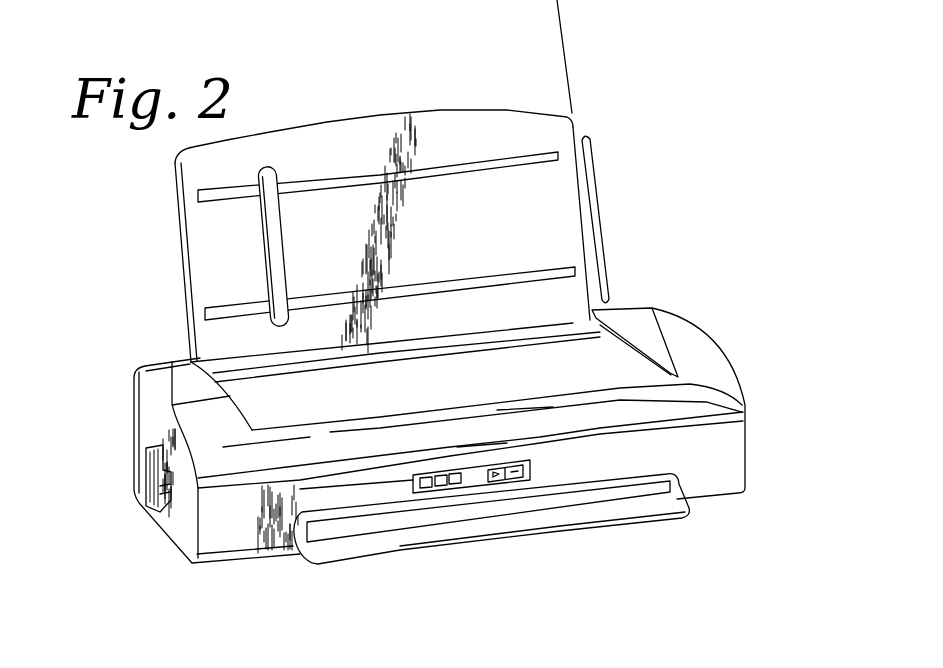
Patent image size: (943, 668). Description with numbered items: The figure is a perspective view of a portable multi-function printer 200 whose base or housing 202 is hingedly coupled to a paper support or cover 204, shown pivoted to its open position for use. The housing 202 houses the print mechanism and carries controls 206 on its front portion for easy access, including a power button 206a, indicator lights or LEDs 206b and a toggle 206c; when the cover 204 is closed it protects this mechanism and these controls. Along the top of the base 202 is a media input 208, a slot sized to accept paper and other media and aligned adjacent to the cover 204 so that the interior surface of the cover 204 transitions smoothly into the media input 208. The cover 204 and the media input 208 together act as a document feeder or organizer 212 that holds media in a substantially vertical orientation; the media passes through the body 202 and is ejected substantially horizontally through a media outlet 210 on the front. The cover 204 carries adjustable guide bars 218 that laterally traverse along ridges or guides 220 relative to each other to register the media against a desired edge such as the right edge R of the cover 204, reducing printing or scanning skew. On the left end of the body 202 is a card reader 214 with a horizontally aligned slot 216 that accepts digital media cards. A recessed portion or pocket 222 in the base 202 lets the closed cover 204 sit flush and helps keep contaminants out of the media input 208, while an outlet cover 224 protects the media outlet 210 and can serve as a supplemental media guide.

The right edge R is at (563, 40).
The multi-function printer 200 is at (757, 143).
The base or housing 202 is at (777, 383).
The paper support or cover 204 is at (555, 172).
The controls 206 is at (467, 432).
The power button 206a is at (421, 477).
The indicator lights or LEDs 206b is at (437, 475).
The toggle 206c is at (453, 473).
The media input 208 is at (573, 320).
The media outlet 210 is at (534, 525).
The document feeder 212 is at (620, 240).
The card reader 214 is at (118, 474).
The slot 216 is at (157, 512).
The adjustable guide bars 218 is at (282, 241).
The ridges or guides 220 is at (413, 179).
The recessed portion or pocket 222 is at (622, 352).
The outlet cover 224 is at (437, 535).